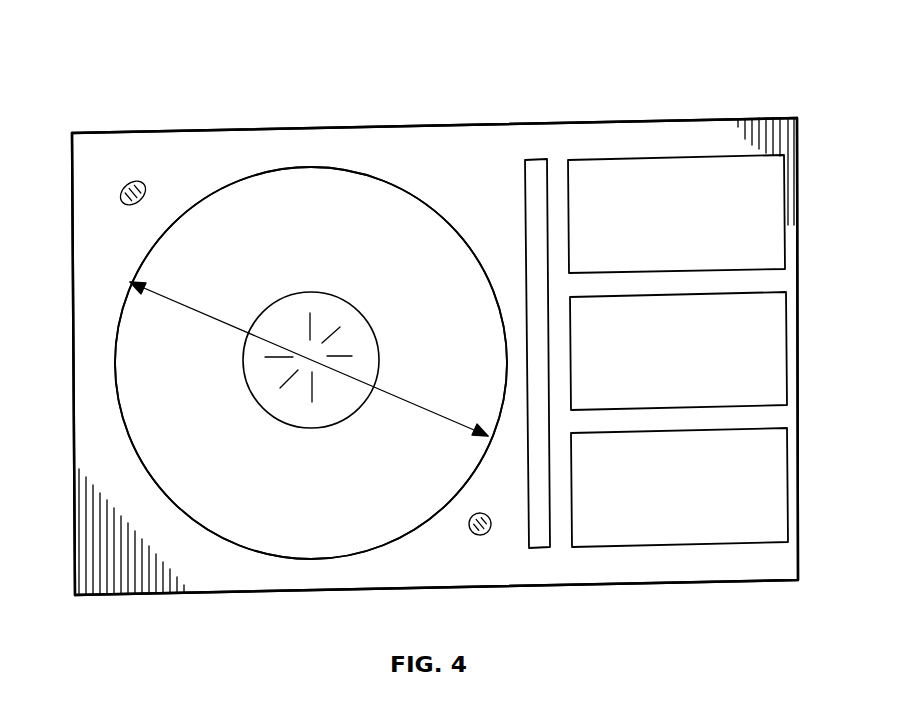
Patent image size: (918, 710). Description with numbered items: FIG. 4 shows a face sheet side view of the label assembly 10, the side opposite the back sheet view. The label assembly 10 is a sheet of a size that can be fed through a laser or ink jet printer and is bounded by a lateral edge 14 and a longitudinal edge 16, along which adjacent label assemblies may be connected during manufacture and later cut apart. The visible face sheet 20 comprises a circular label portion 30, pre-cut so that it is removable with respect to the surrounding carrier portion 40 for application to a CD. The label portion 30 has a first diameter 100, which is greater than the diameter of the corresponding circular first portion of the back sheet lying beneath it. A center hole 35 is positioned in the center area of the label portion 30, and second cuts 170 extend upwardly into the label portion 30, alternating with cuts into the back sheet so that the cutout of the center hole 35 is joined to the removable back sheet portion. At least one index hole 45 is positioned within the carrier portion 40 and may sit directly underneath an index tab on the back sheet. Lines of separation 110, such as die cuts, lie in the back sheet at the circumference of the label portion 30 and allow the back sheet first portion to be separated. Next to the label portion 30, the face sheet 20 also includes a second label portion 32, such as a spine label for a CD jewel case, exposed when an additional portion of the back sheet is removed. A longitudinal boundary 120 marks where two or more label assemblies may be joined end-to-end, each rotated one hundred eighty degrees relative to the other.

The label assembly 10 is at (135, 617).
The lateral edge 14 is at (77, 467).
The longitudinal edge 16 is at (110, 133).
The face sheet 20 is at (607, 110).
The label portion 30 is at (436, 210).
The second label portion 32 is at (537, 160).
The center hole 35 is at (342, 307).
The carrier portion 40 is at (85, 267).
The index hole 45 is at (148, 191).
The first diameter 100 is at (207, 310).
The lines of separation 110 is at (478, 253).
The longitudinal boundary 120 is at (728, 118).
The second cuts 170 is at (309, 323).